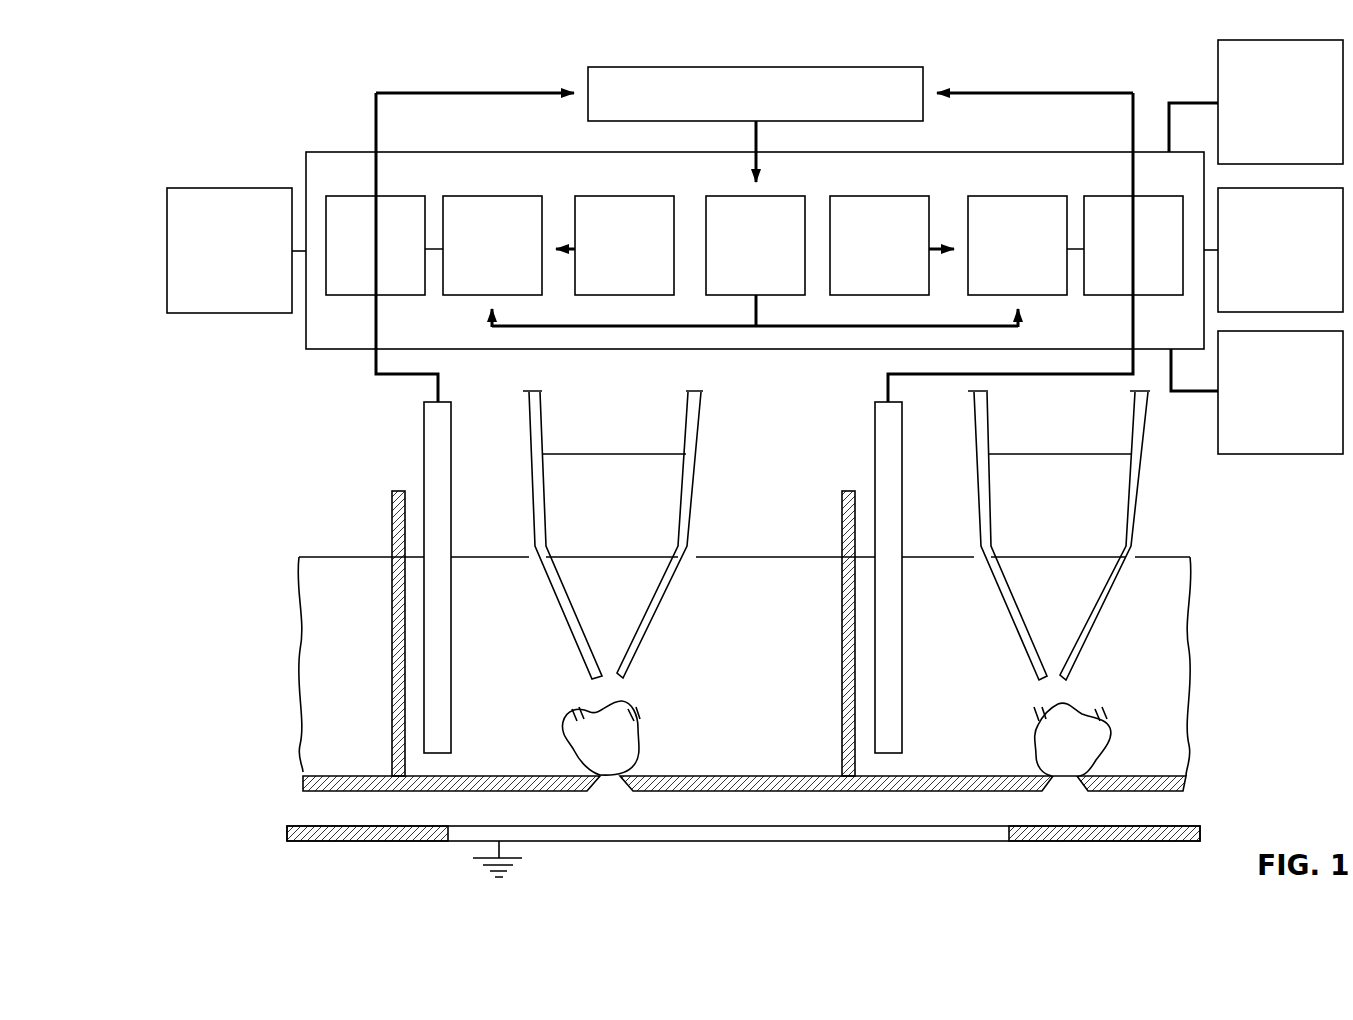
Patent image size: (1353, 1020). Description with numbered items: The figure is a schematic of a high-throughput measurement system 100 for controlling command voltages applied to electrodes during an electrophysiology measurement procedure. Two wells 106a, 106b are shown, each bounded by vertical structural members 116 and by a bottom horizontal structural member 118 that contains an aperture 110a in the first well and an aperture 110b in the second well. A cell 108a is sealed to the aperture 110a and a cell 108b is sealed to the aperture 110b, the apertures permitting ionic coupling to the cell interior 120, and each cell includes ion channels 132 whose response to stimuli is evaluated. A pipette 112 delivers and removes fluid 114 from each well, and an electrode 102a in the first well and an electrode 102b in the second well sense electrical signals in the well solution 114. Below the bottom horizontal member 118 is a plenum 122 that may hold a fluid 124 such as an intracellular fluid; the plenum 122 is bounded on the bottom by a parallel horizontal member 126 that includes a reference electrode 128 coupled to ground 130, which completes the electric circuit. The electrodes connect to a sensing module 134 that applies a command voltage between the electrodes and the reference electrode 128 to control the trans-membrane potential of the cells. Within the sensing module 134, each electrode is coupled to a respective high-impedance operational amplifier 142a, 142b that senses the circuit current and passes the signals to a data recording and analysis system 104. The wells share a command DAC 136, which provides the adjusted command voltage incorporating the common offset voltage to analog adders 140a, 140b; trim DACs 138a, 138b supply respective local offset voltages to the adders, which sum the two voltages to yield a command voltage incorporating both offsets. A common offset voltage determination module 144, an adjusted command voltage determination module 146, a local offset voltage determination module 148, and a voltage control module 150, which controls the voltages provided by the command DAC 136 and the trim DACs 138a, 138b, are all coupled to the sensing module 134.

The high-throughput measurement system 100 is at (266, 127).
The electrode 102a is at (427, 434).
The electrode 102b is at (874, 430).
The data recording and analysis system 104 is at (742, 112).
The well 106a is at (494, 526).
The well 106b is at (940, 522).
The cell 108a is at (642, 754).
The cell 108b is at (1034, 752).
The aperture 110a is at (612, 785).
The aperture 110b is at (1065, 782).
The pipette 112 is at (692, 497).
The fluid 114 is at (522, 618).
The vertical structural member 116 is at (391, 528).
The bottom horizontal structural member 118 is at (1185, 782).
The cell interior 120 is at (620, 755).
The plenum 122 is at (315, 812).
The fluid 124 is at (770, 815).
The parallel horizontal member 126 is at (287, 833).
The reference electrode 128 is at (668, 842).
The ground 130 is at (522, 858).
The ion channel 132 is at (568, 707).
The sensing module 134 is at (640, 180).
The command DAC 136 is at (741, 271).
The trim DAC 138a is at (606, 271).
The trim DAC 138b is at (861, 271).
The analog adder 140a is at (474, 271).
The analog adder 140b is at (999, 271).
The high-impedance operational amplifier 142a is at (357, 291).
The high-impedance operational amplifier 142b is at (1115, 291).
The common offset voltage determination module 144 is at (1266, 158).
The adjusted command voltage determination module 146 is at (1266, 306).
The local offset voltage determination module 148 is at (1266, 448).
The voltage control module 150 is at (215, 286).